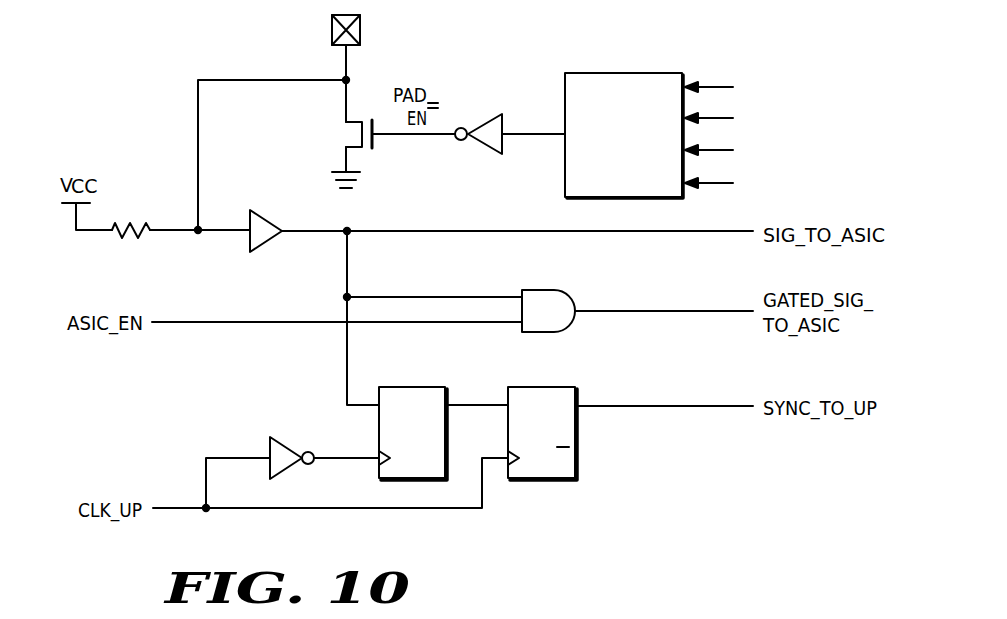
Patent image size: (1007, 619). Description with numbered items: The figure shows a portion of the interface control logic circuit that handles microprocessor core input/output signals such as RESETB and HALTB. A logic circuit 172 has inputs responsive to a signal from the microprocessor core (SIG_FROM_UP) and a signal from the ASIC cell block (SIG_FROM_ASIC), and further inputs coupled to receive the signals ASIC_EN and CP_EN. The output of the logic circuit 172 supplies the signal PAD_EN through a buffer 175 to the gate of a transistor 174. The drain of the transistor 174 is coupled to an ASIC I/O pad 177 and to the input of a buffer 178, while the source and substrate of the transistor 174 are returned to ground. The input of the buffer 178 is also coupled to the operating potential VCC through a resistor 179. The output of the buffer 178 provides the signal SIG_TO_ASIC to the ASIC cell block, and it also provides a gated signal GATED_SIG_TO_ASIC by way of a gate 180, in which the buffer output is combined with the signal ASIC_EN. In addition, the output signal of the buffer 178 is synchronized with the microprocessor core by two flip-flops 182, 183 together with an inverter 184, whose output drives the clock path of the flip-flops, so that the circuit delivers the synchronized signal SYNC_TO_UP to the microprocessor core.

The logic circuit 172 is at (607, 70).
The transistor 174 is at (338, 134).
The buffer 175 is at (483, 153).
The ASIC I/O pad 177 is at (333, 23).
The buffer 178 is at (267, 247).
The resistor 179 is at (129, 243).
The OR gate 180 is at (570, 294).
The flip-flop 182 is at (421, 386).
The flip-flop 183 is at (545, 481).
The inverter 184 is at (286, 443).